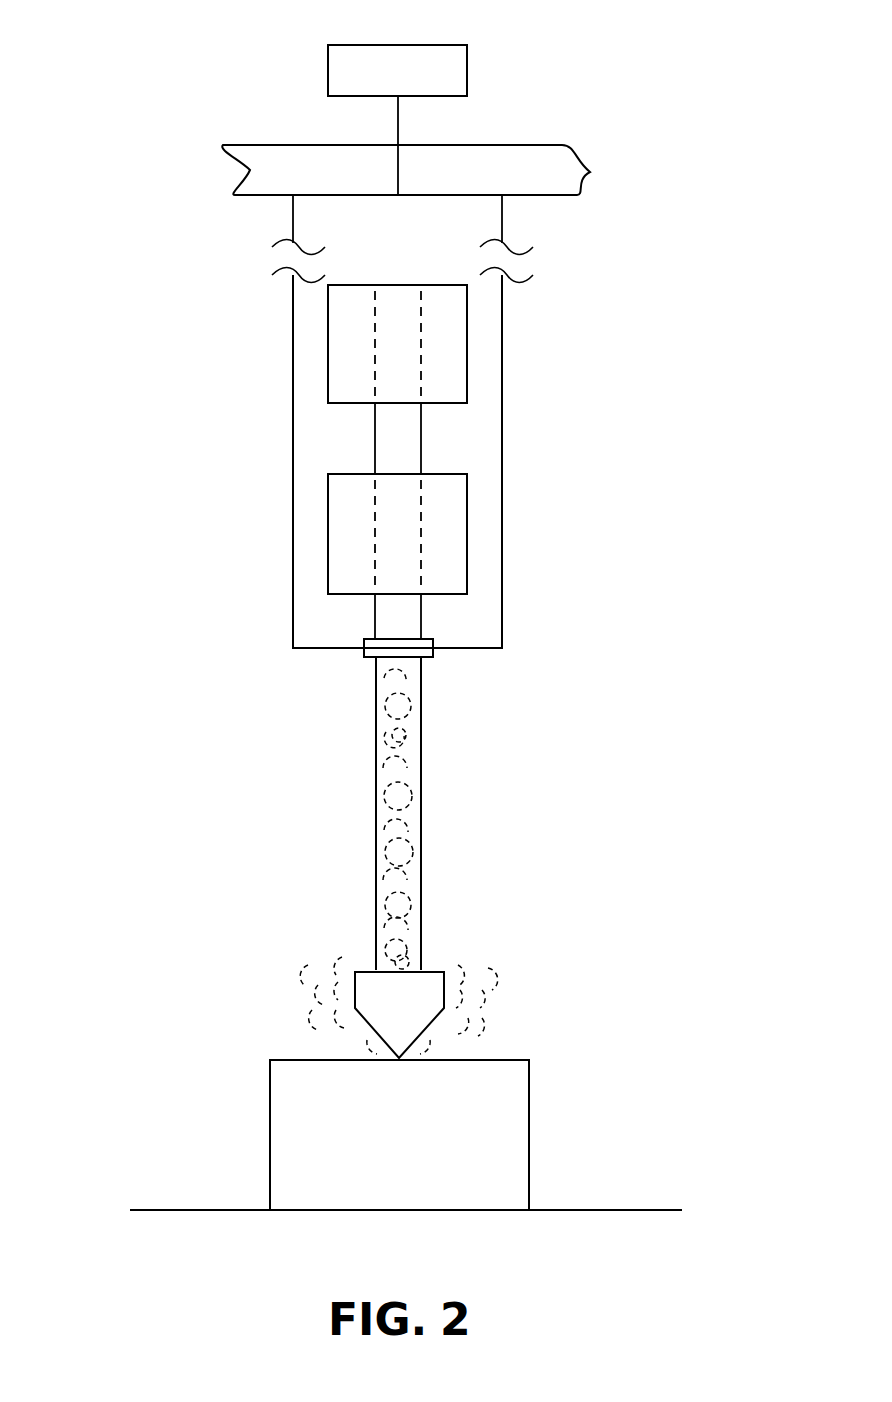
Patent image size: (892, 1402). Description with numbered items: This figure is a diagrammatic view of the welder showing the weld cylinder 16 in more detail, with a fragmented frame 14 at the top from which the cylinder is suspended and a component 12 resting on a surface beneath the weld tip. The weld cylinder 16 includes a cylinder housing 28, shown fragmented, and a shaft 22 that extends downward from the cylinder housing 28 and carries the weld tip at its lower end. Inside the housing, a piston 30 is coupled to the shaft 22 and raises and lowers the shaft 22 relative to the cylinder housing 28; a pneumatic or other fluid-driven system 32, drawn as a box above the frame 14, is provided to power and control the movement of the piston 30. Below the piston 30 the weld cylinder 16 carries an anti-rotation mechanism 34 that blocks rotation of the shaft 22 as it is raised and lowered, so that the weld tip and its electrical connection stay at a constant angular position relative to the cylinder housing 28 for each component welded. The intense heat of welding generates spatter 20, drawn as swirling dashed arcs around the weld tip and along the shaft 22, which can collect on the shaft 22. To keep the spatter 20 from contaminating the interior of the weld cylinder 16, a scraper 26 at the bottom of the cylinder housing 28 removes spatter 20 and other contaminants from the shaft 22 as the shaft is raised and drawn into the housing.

The workpiece 12 is at (562, 1098).
The support arm 14 is at (535, 143).
The weld cylinder 16 is at (228, 579).
The spatter 20 is at (513, 973).
The shaft 22 is at (432, 851).
The scraper 26 is at (443, 663).
The cylinder housing 28 is at (502, 567).
The piston 30 is at (450, 328).
The pneumatic or other fluid-driven system 32 is at (467, 60).
The anti-rotation mechanism 34 is at (450, 517).